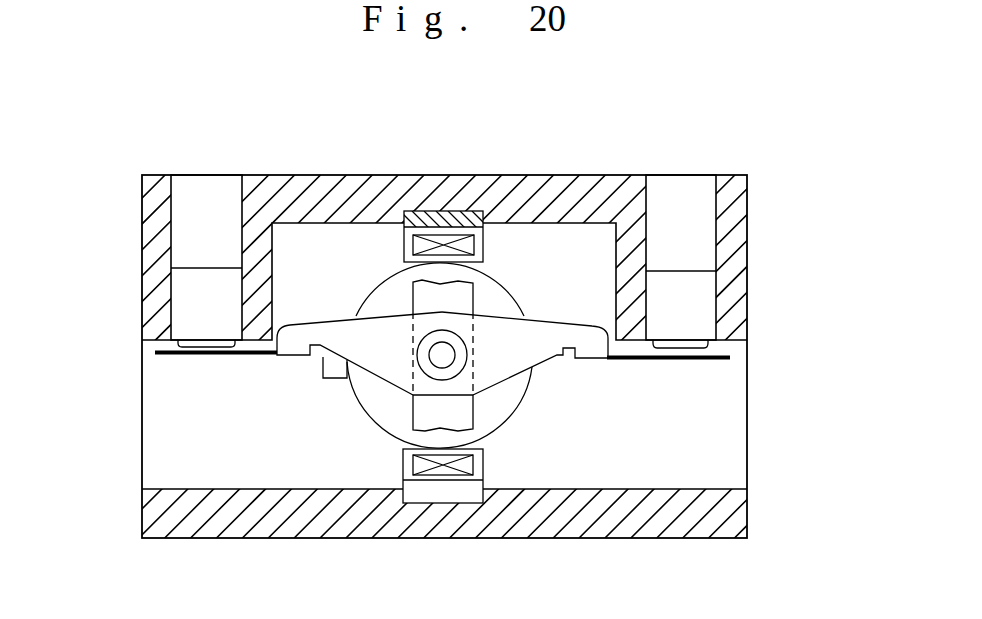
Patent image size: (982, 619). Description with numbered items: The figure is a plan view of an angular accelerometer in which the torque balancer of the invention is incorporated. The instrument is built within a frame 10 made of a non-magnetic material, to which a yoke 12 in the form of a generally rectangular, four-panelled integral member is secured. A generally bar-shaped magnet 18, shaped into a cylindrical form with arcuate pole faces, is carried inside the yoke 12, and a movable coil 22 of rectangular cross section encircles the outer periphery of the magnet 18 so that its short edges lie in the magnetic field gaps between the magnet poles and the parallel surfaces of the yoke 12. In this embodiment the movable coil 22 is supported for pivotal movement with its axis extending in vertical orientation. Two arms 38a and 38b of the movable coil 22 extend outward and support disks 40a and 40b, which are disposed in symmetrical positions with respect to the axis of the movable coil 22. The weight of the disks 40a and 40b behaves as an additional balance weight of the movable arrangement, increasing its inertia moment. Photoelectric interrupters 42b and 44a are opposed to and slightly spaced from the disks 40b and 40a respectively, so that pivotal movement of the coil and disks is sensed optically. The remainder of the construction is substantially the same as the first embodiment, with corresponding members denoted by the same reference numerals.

The frame 10 is at (747, 518).
The yoke 12 is at (455, 218).
The movable coil 22 is at (413, 467).
The magnet 18 is at (358, 406).
The arm 38b is at (328, 327).
The arm 38a is at (587, 337).
The disk 40b is at (176, 357).
The disk 40a is at (696, 362).
The photoelectric interrupter 42b is at (187, 301).
The photoelectric interrupter 44a is at (688, 316).